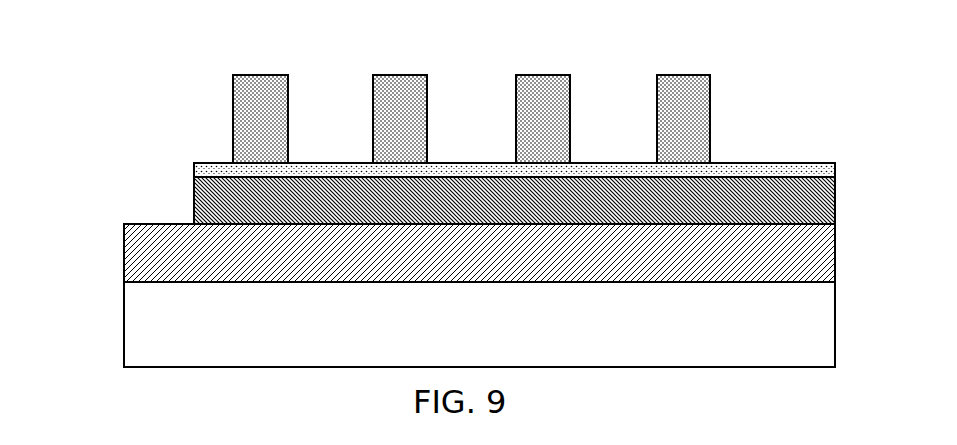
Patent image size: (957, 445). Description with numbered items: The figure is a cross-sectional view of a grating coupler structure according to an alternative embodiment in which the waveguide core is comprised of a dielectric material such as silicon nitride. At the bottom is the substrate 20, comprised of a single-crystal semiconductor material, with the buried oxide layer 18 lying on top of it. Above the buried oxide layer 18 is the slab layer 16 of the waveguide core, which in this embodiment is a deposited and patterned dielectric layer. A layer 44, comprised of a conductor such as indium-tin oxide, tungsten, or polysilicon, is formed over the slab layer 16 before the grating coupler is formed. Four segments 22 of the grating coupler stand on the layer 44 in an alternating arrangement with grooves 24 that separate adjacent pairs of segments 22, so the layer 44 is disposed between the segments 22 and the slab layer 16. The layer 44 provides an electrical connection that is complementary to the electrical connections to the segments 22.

The slab layer 16 is at (230, 202).
The buried oxide layer 18 is at (167, 250).
The substrate 20 is at (158, 349).
The segments 22 is at (262, 124).
The grooves 24 is at (286, 57).
The layer 44 is at (217, 168).